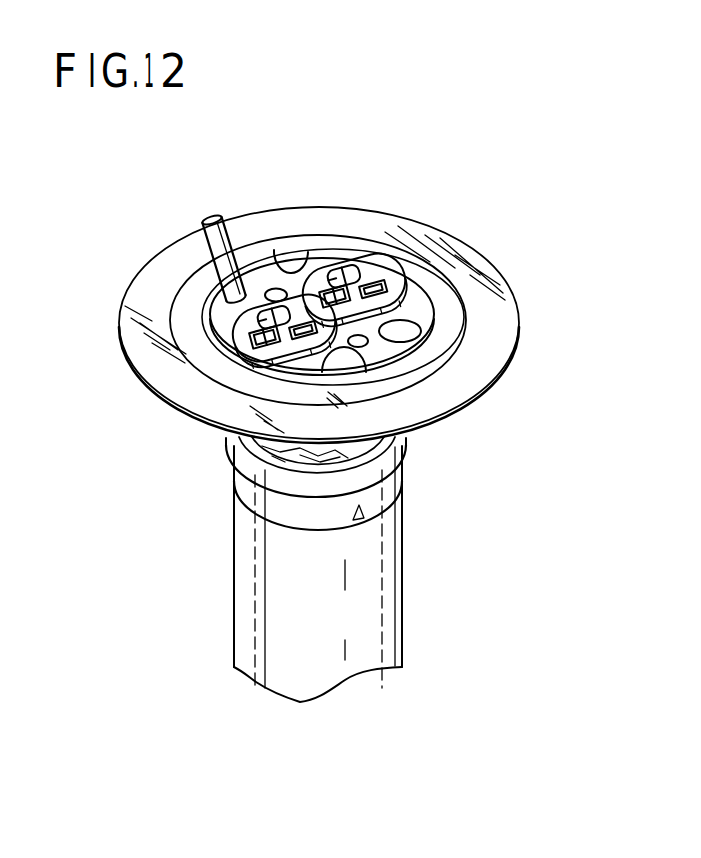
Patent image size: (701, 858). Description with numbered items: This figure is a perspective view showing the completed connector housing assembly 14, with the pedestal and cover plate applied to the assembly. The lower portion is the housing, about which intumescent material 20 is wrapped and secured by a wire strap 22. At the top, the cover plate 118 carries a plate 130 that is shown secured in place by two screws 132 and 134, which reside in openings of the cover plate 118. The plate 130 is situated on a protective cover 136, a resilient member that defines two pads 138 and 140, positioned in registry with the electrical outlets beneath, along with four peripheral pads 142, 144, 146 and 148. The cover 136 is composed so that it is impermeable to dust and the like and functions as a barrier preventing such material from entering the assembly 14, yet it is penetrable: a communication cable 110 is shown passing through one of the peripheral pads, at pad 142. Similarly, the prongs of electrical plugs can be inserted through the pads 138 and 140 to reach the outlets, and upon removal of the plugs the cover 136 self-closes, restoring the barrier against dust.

The connector housing assembly 14 is at (446, 541).
The intumescent material 20 is at (346, 631).
The wire strap 22 is at (352, 522).
The communication cable 110 is at (227, 216).
The cover plate 118 is at (468, 265).
The plate 130 is at (415, 298).
The screw 132 is at (267, 287).
The screw 134 is at (372, 345).
The protective cover 136 is at (418, 328).
The pad 138 is at (283, 341).
The pad 140 is at (374, 256).
The peripheral pad 142 is at (240, 284).
The peripheral pad 144 is at (298, 252).
The peripheral pad 146 is at (425, 312).
The peripheral pad 148 is at (394, 384).